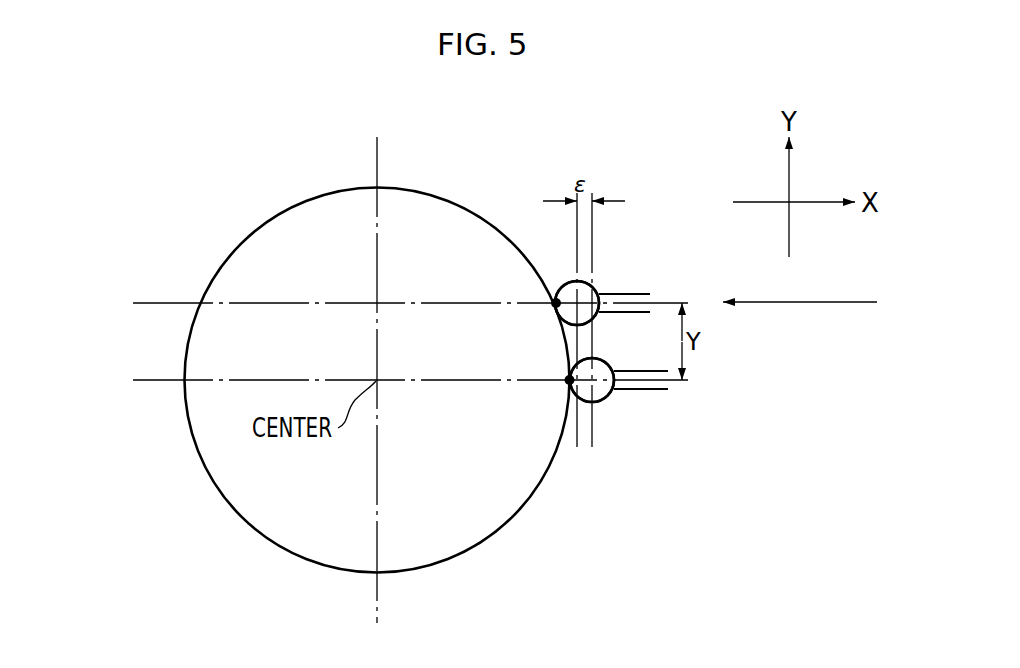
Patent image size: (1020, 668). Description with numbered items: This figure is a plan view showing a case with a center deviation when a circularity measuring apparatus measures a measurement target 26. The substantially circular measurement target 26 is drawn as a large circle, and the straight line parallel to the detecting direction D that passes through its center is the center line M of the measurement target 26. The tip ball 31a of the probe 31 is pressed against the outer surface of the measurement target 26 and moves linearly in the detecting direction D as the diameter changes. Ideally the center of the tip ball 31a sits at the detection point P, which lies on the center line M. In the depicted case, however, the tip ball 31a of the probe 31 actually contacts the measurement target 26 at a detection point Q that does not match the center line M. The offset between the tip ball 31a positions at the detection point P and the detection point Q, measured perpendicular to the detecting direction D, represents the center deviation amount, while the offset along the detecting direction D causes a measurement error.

The measurement target 26 is at (516, 516).
The probe 31 is at (646, 289).
The tip ball 31a is at (596, 289).
The center line M is at (160, 381).
The detection point P is at (567, 383).
The detection point Q is at (554, 305).
The detecting direction D is at (808, 303).